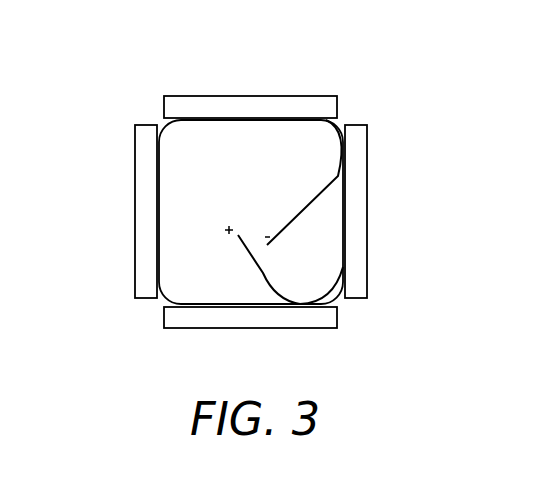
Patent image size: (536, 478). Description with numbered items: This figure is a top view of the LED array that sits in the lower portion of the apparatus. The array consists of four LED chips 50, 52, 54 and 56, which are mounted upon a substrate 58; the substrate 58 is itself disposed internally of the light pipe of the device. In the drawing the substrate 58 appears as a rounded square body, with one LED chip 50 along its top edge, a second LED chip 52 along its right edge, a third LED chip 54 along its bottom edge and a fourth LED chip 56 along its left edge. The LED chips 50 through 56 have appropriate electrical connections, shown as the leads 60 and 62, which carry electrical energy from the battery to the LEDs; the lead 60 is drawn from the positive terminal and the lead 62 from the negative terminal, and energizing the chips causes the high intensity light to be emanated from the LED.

The LED chip 50 is at (252, 95).
The LED chip 52 is at (367, 212).
The LED chip 54 is at (250, 328).
The LED chip 56 is at (135, 212).
The substrate 58 is at (251, 212).
The lead 60 is at (262, 280).
The lead 62 is at (313, 200).